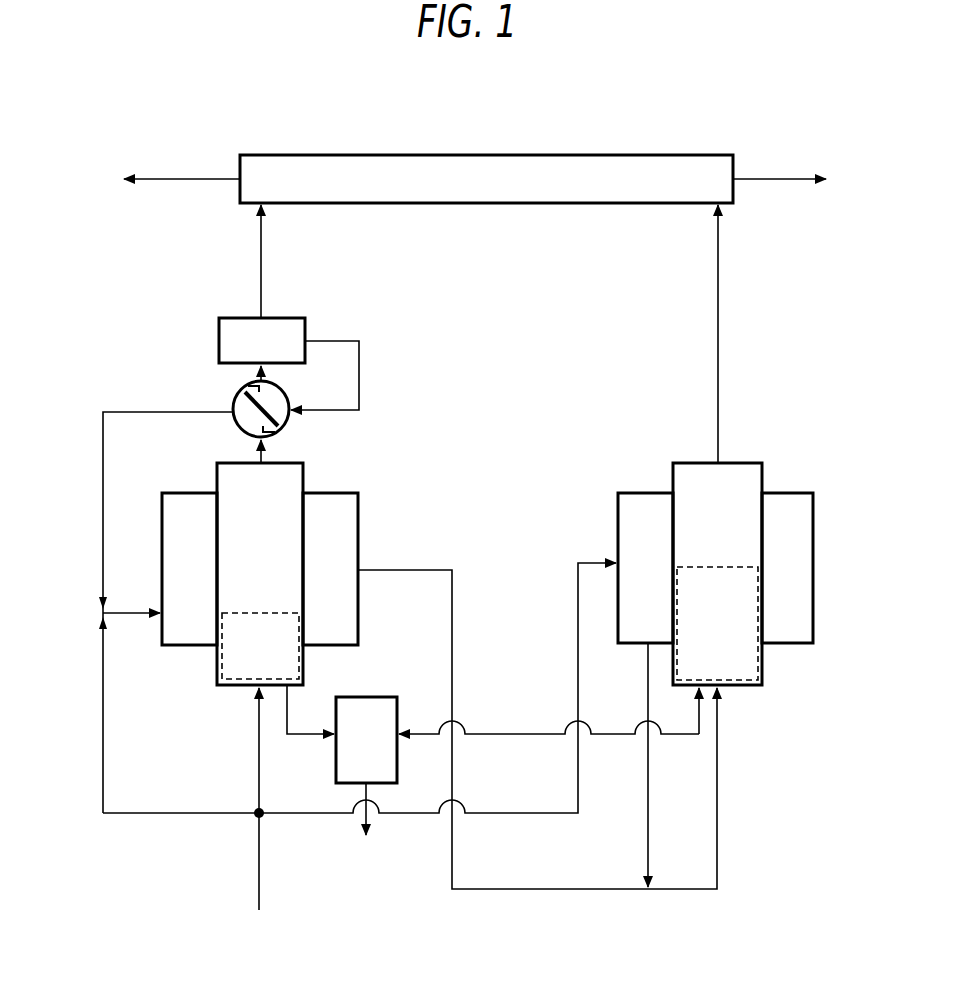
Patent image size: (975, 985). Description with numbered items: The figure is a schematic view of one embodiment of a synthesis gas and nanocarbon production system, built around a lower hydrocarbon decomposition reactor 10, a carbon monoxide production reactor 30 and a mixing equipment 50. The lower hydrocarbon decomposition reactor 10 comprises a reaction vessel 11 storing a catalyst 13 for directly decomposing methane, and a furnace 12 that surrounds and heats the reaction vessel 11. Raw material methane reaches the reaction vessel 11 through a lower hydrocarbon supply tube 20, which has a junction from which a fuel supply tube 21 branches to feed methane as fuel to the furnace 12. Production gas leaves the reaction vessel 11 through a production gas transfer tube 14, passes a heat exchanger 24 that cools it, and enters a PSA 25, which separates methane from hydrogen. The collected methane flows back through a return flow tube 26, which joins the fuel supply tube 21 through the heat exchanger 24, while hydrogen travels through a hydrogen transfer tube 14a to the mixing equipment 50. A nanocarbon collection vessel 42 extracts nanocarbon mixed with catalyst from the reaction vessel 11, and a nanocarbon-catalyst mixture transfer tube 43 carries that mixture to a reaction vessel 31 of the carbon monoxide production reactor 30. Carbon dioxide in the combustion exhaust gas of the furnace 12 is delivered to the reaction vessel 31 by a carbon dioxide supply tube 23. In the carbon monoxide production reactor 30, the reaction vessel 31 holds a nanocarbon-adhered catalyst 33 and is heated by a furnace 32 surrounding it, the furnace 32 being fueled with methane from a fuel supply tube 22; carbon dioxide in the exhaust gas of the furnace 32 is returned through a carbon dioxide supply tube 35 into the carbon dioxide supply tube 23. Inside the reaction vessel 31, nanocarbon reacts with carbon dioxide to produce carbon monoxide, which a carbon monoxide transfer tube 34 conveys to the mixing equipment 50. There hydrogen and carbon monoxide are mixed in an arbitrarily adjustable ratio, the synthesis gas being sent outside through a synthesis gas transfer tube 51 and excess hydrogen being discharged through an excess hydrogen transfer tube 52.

The lower hydrocarbon decomposition reactor 10 is at (275, 611).
The reaction vessel 11 is at (305, 478).
The furnace 12 is at (358, 520).
The catalyst 13 is at (228, 688).
The production gas transfer tube 14 is at (258, 458).
The hydrogen transfer tube 14a is at (262, 225).
The lower hydrocarbon supply tube 20 is at (259, 790).
The fuel supply tube 21 is at (103, 773).
The fuel supply tube 22 is at (480, 813).
The carbon dioxide supply tube 23 is at (452, 660).
The heat exchanger 24 is at (284, 396).
The PSA 25 is at (305, 325).
The return flow tube 26 is at (359, 370).
The carbon monoxide production reactor 30 is at (763, 561).
The reaction vessel 31 is at (762, 475).
The furnace 32 is at (813, 568).
The nanocarbon-adhered catalyst 33 is at (760, 652).
The carbon monoxide transfer tube 34 is at (718, 425).
The carbon dioxide supply tube 35 is at (648, 770).
The nanocarbon collection vessel 42 is at (372, 697).
The nanocarbon-catalyst mixture transfer tube 43 is at (488, 734).
The mixing equipment 50 is at (688, 155).
The synthesis gas transfer tube 51 is at (785, 179).
The excess hydrogen transfer tube 52 is at (185, 179).